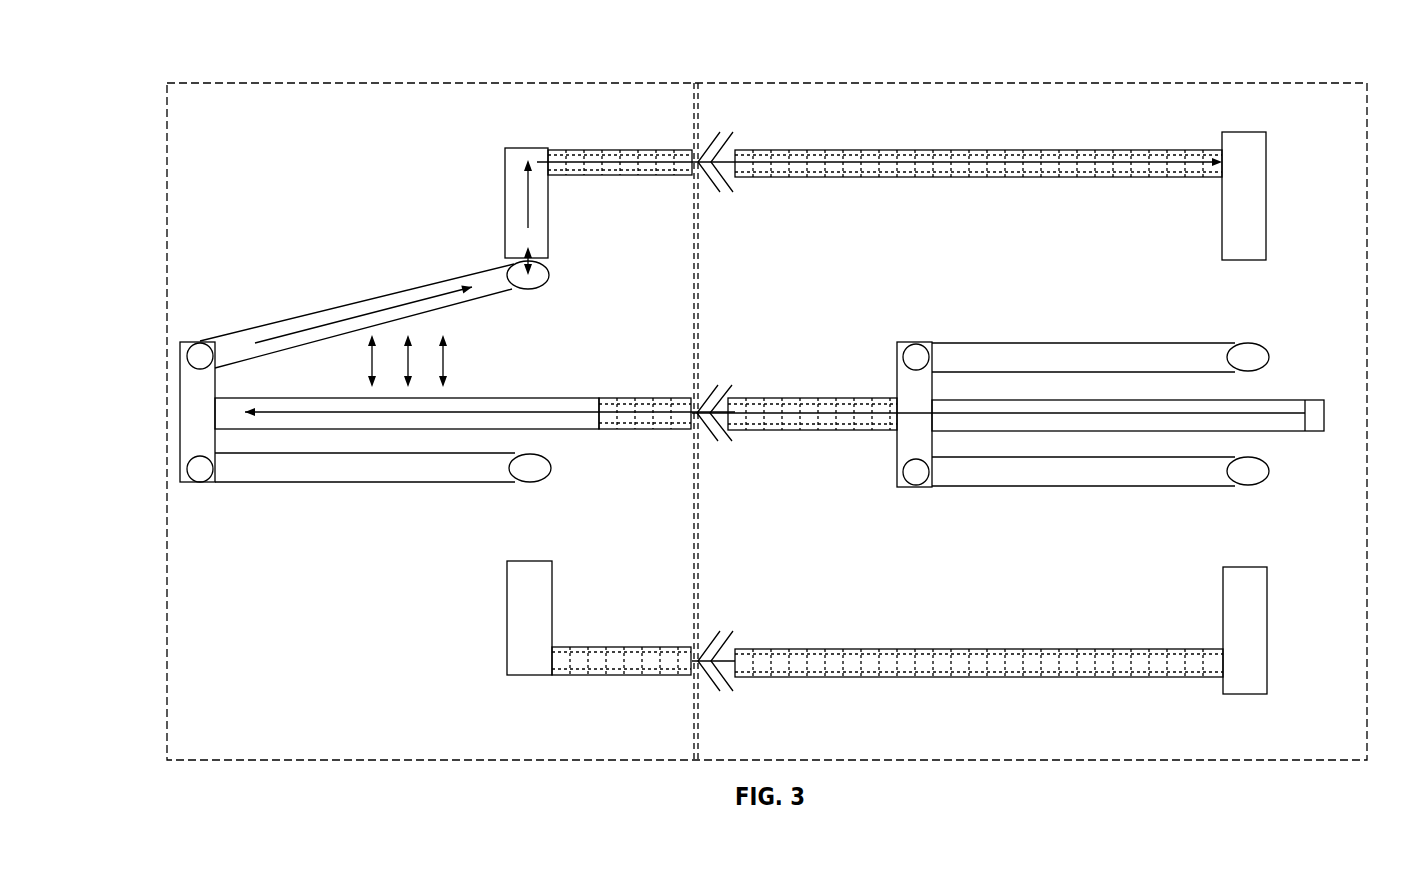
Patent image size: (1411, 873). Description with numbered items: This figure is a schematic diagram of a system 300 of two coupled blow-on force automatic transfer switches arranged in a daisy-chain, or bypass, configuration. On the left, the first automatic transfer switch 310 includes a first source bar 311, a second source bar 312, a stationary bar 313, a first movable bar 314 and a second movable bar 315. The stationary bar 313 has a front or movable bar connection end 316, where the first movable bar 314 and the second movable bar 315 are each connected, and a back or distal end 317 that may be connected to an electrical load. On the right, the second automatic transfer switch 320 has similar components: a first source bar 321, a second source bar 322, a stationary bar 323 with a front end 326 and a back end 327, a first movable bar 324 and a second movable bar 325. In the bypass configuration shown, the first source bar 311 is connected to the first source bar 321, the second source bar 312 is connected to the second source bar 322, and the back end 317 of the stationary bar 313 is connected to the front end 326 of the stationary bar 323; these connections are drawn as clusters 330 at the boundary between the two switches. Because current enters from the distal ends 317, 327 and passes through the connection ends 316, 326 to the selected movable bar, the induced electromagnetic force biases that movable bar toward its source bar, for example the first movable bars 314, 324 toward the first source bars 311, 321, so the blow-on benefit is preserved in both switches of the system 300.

The system 300 is at (1285, 60).
The first automatic transfer switch 310 is at (268, 288).
The first source bar 311 is at (540, 148).
The second source bar 312 is at (507, 638).
The stationary bar 313 is at (532, 398).
The first movable bar 314 is at (497, 298).
The second movable bar 315 is at (443, 485).
The front or movable bar connection end 316 is at (215, 410).
The back or distal end 317 is at (595, 398).
The second automatic transfer switch 320 is at (1291, 133).
The first source bar 321 is at (1267, 195).
The second source bar 322 is at (1267, 630).
The stationary bar 323 is at (1273, 400).
The first movable bar 324 is at (1052, 342).
The second movable bar 325 is at (1040, 488).
The front end 326 is at (897, 420).
The back end 327 is at (1320, 400).
The clusters 330 is at (723, 126).